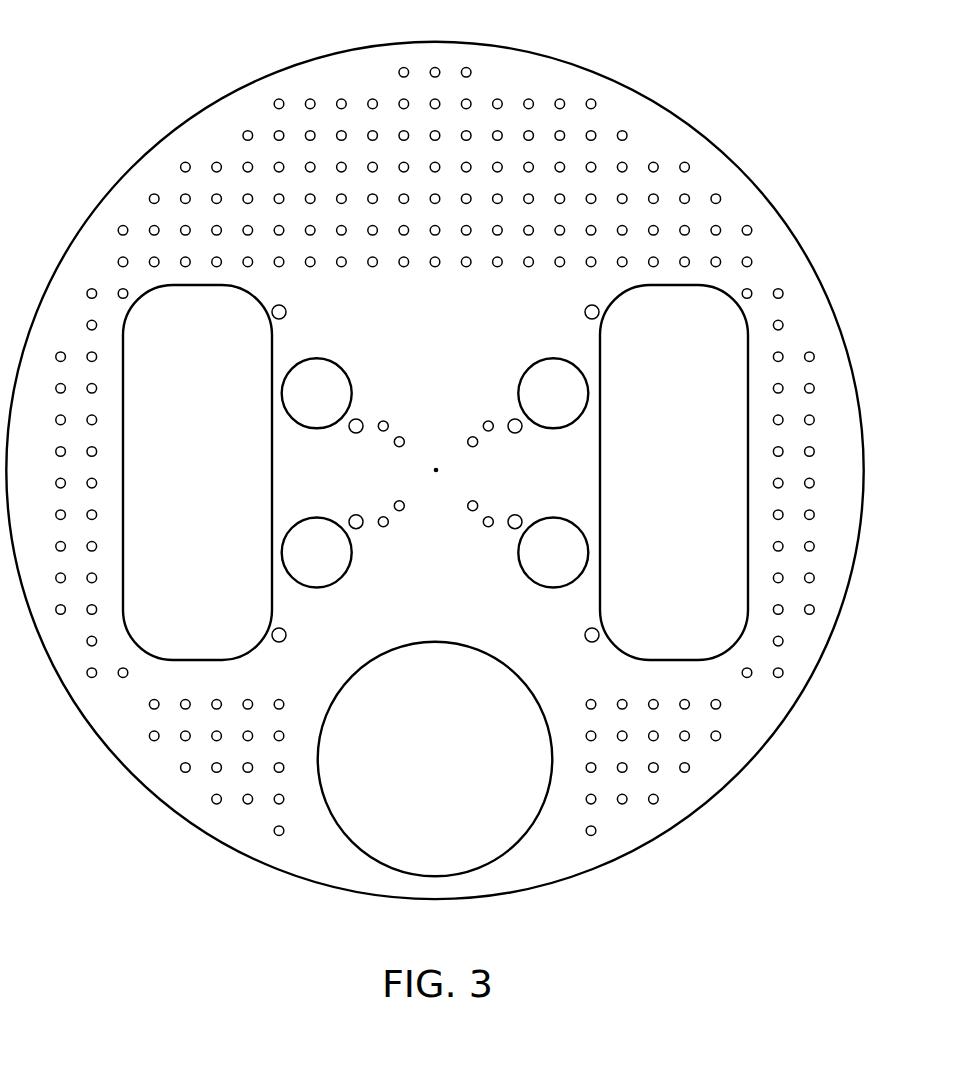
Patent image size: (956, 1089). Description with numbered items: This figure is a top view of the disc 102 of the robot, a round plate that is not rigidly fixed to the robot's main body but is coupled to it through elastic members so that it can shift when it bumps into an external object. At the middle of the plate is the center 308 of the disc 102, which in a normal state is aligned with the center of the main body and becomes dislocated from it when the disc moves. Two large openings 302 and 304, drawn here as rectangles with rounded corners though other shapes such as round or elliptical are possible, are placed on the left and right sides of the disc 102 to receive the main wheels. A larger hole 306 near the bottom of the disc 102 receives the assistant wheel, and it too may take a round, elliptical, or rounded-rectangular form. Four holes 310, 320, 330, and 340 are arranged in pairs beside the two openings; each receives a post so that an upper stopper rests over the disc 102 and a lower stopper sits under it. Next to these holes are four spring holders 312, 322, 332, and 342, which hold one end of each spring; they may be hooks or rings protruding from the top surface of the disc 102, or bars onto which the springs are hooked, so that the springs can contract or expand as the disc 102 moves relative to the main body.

The disc 102 is at (738, 108).
The opening 302 is at (141, 334).
The opening 304 is at (741, 331).
The hole 306 is at (484, 863).
The center 308 is at (436, 470).
The hole 310 is at (306, 396).
The spring holder 312 is at (286, 311).
The hole 320 is at (306, 556).
The spring holder 322 is at (286, 634).
The hole 330 is at (565, 396).
The spring holder 332 is at (585, 312).
The hole 340 is at (565, 556).
The spring holder 342 is at (585, 634).